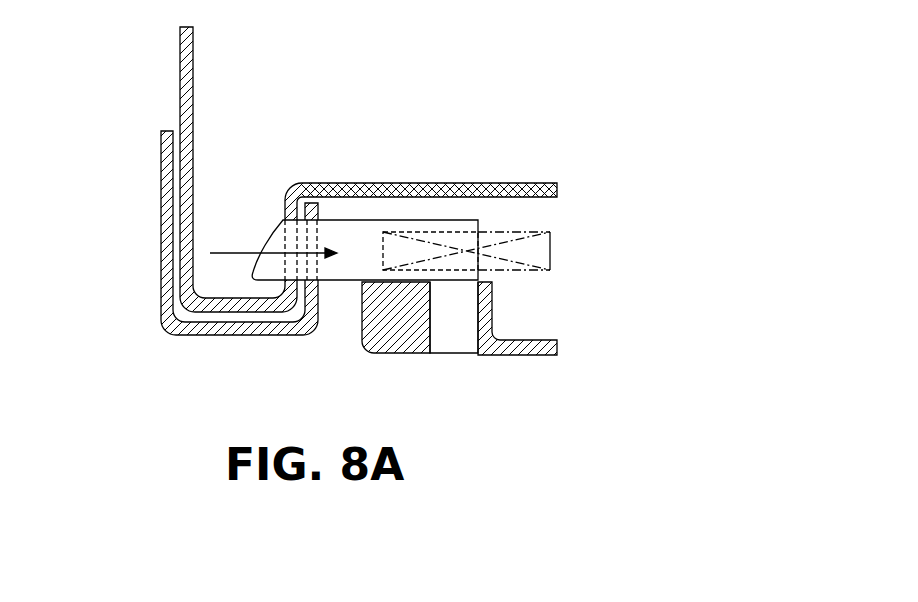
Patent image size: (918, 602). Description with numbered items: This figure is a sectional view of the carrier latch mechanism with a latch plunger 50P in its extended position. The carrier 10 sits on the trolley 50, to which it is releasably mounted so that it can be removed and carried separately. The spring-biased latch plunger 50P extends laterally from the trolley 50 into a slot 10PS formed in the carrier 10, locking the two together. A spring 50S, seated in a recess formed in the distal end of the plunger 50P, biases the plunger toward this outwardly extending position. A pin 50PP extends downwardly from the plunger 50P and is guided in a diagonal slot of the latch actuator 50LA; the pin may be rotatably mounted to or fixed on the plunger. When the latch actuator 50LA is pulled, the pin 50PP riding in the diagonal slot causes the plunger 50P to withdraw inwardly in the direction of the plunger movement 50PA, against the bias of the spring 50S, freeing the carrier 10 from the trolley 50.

The carrier 10 is at (192, 78).
The slot 10PS is at (275, 125).
The trolley 50 is at (170, 328).
The plunger movement 50PA is at (237, 253).
The latch plunger 50P is at (342, 232).
The spring 50S is at (540, 268).
The pin 50PP is at (453, 320).
The latch actuator 50LA is at (527, 353).